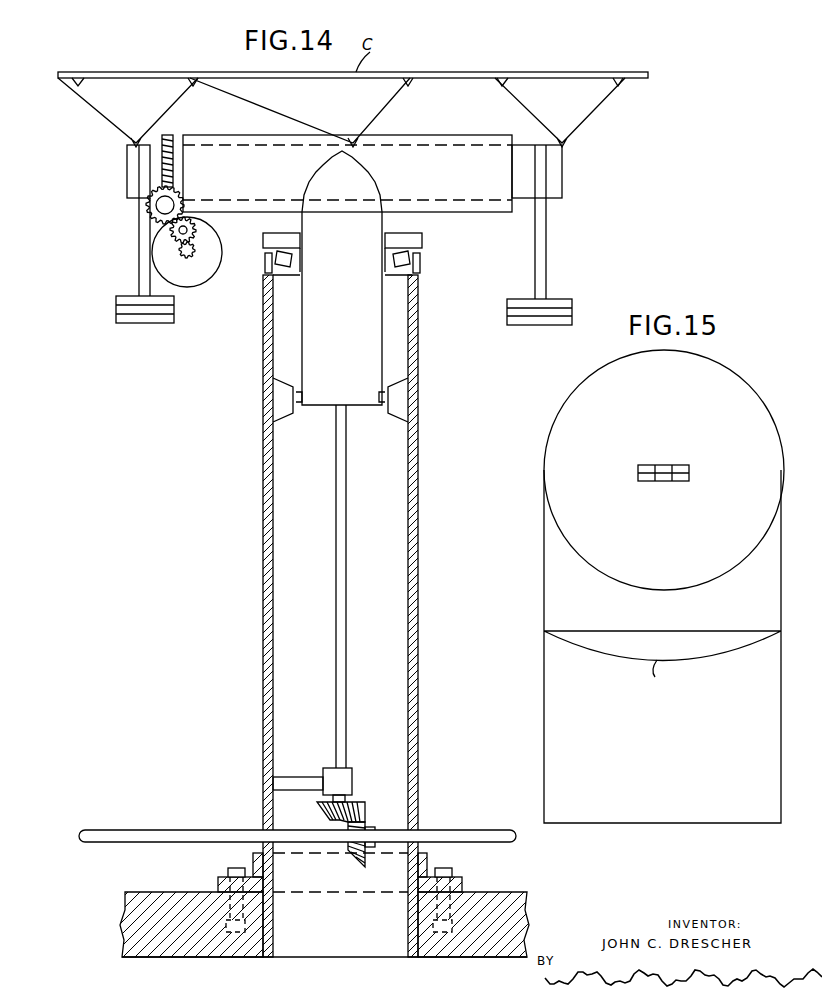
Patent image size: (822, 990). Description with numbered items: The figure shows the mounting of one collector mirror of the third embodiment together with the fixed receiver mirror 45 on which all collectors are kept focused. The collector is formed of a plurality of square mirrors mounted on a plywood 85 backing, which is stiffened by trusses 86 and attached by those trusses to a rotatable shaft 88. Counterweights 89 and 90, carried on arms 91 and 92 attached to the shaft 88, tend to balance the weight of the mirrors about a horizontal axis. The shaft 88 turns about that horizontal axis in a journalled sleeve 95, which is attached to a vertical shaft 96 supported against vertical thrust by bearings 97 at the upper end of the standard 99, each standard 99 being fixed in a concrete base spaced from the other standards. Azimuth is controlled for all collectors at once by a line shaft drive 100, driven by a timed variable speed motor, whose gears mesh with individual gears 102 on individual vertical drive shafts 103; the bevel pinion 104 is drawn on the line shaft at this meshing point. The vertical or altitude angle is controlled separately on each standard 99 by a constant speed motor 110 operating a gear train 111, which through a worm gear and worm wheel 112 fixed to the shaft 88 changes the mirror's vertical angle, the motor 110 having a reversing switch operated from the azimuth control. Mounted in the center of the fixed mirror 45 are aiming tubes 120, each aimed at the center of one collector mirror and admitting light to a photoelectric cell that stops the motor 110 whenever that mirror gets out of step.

In FIG. 14, the plywood backing 85 is at (230, 83).
In FIG. 14, the trusses 86 is at (377, 118).
In FIG. 14, the rotatable shaft 88 is at (166, 112).
In FIG. 14, the counterweight 89 is at (150, 325).
In FIG. 14, the counterweight 90 is at (535, 325).
In FIG. 14, the arm 91 is at (139, 258).
In FIG. 14, the arm 92 is at (546, 270).
In FIG. 14, the journalled sleeve 95 is at (462, 112).
In FIG. 14, the vertical shaft 96 is at (349, 338).
In FIG. 14, the bearings 97 is at (275, 266).
In FIG. 14, the standard 99 is at (263, 612).
In FIG. 14, the line shaft drive 100 is at (460, 830).
In FIG. 14, the gear 102 is at (318, 806).
In FIG. 14, the vertical drive shaft 103 is at (346, 612).
In FIG. 14, the bevel pinion 104 is at (355, 866).
In FIG. 14, the motor 110 is at (202, 285).
In FIG. 14, the gear train 111 is at (184, 196).
In FIG. 14, the worm gear and worm wheel 112 is at (174, 155).
In FIG. 15, the fixed mirror 45 is at (748, 388).
In FIG. 15, the aiming tube 120 is at (678, 464).